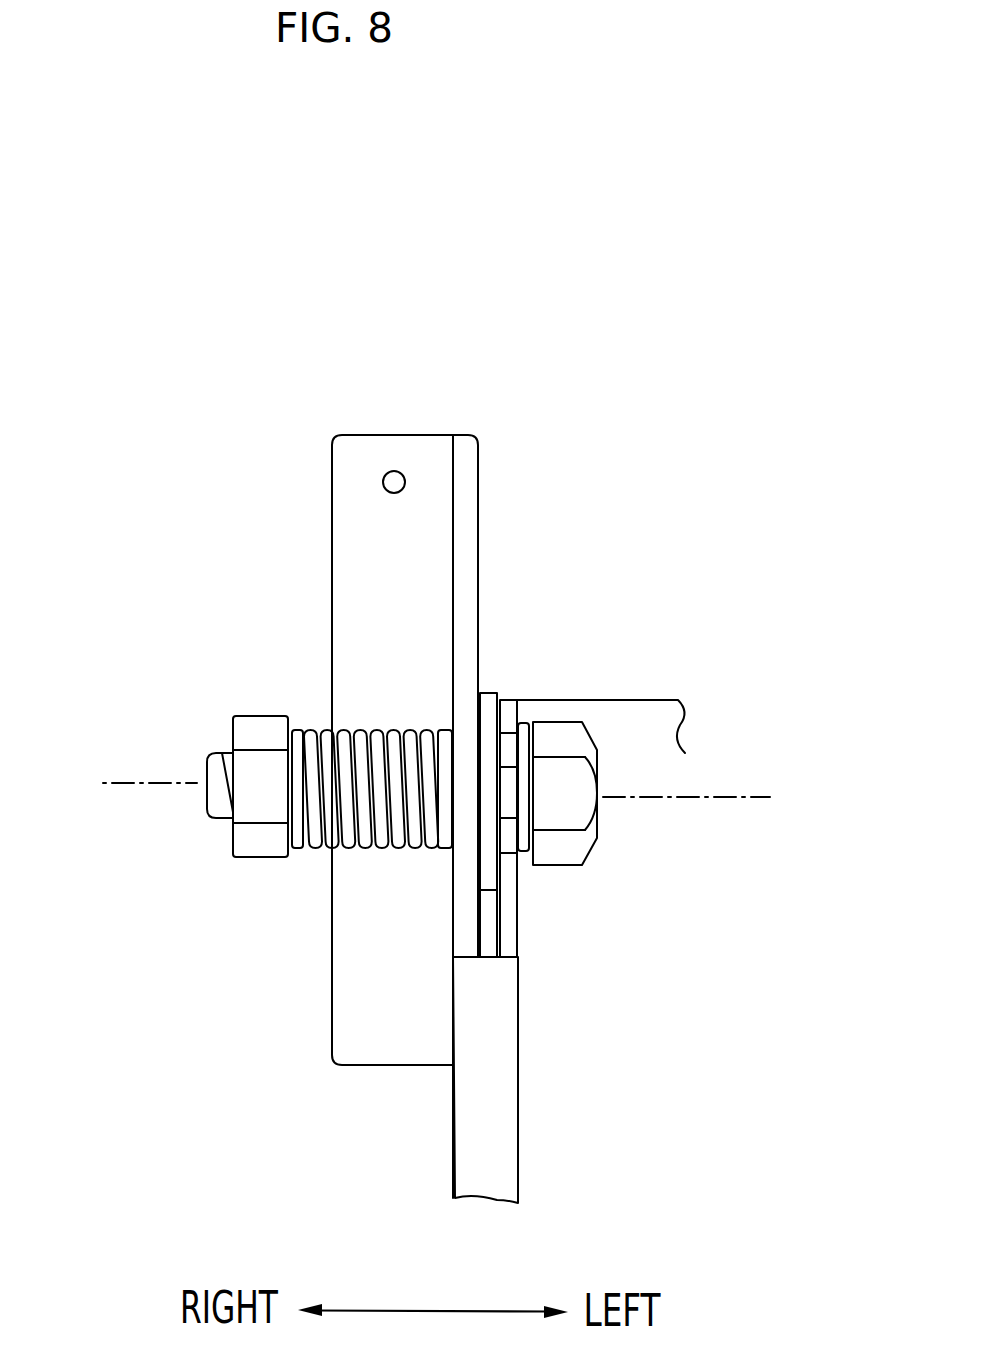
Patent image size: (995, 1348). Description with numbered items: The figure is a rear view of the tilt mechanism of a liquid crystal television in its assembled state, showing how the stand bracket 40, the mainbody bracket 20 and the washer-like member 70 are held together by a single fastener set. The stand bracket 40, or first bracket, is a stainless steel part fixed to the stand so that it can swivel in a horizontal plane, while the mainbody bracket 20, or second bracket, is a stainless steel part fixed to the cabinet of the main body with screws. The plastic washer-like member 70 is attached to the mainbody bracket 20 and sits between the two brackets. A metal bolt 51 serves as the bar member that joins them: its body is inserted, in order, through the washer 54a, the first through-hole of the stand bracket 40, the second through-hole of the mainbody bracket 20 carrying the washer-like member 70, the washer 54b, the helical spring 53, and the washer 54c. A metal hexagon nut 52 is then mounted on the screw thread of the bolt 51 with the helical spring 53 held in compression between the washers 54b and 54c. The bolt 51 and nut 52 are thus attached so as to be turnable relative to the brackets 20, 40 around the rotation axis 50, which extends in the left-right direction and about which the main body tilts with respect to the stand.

The mainbody bracket 20 is at (420, 412).
The stand bracket 40 is at (512, 698).
The rotation axis 50 is at (128, 785).
The bolt 51 is at (605, 842).
The hexagon nut 52 is at (258, 713).
The helical spring 53 is at (370, 728).
The washer 54a is at (522, 853).
The washer 54b is at (445, 857).
The washer 54c is at (297, 855).
The washer-like member 70 is at (490, 690).